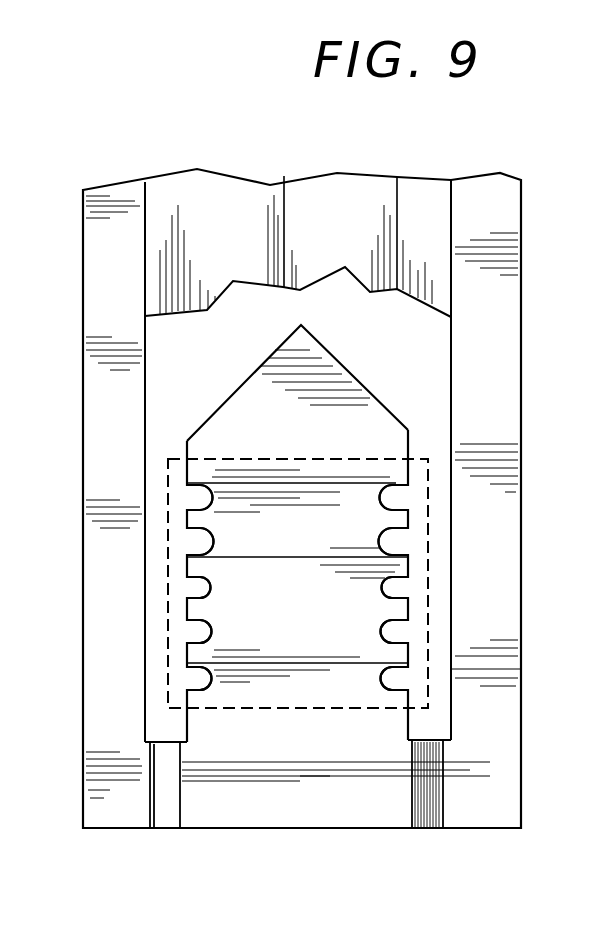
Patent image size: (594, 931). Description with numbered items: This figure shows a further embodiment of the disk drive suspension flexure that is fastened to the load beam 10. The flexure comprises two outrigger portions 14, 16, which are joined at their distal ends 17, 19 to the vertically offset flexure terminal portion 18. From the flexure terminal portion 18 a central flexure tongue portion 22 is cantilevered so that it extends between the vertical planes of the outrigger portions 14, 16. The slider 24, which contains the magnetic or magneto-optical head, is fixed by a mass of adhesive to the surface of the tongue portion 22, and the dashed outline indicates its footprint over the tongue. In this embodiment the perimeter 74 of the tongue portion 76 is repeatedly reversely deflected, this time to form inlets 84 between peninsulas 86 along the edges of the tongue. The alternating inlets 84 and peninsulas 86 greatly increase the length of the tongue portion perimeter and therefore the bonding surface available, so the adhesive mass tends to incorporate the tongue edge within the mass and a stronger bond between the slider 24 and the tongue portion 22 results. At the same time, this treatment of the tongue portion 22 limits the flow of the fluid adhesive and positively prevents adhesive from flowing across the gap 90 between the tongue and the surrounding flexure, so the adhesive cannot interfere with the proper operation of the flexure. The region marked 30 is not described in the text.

The load beam 10 is at (258, 182).
The outrigger portion 14 is at (115, 205).
The outrigger portion 16 is at (480, 228).
The distal end 17 is at (118, 808).
The flexure terminal portion 18 is at (254, 808).
The distal end 19 is at (453, 818).
The flexure tongue portion 22 is at (283, 390).
The slider 24 is at (430, 537).
The core body 30 is at (292, 587).
The perimeter 74 is at (190, 658).
The tongue portion 76 is at (353, 623).
The inlets 84 is at (197, 541).
The peninsulas 86 is at (202, 614).
The gap 90 is at (437, 488).